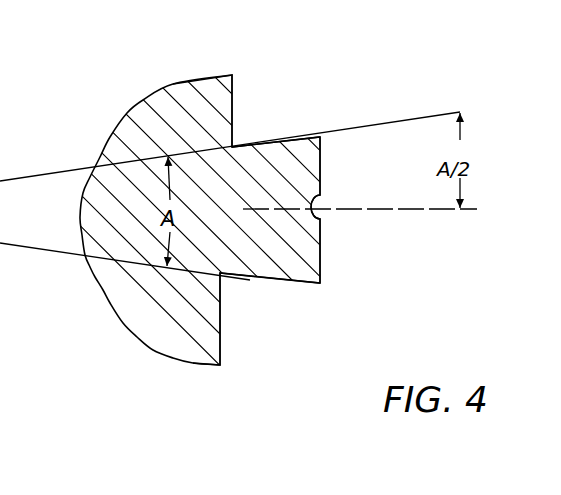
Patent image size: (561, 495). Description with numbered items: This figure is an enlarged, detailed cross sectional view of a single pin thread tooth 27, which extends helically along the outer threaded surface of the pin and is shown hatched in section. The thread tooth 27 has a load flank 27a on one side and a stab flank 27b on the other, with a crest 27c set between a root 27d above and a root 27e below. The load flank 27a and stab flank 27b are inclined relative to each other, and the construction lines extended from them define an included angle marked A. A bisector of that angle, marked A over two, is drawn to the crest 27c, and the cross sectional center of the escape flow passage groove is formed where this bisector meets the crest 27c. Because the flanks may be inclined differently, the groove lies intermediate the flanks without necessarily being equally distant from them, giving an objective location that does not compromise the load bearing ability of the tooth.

The pin thread tooth 27 is at (322, 220).
The load flank 27a is at (297, 135).
The stab flank 27b is at (250, 277).
The crest 27c is at (322, 268).
The root 27d is at (233, 90).
The root 27e is at (222, 347).